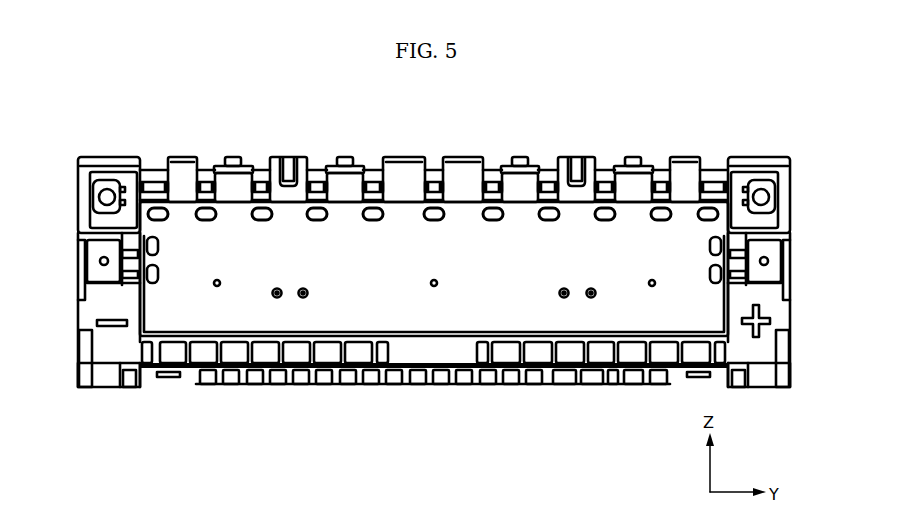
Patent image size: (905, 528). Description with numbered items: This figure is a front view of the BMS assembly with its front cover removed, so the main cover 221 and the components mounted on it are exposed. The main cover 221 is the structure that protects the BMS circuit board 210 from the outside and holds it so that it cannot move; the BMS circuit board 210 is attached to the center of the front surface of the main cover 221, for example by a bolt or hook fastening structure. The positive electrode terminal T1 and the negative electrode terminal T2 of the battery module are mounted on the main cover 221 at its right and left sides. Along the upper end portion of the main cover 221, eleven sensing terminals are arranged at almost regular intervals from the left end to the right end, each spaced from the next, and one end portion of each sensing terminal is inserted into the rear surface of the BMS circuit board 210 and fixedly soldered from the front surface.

The BMS circuit board 210 is at (192, 307).
The main cover 221 is at (92, 306).
The positive electrode terminal T1 is at (772, 189).
The negative electrode terminal T2 is at (96, 193).